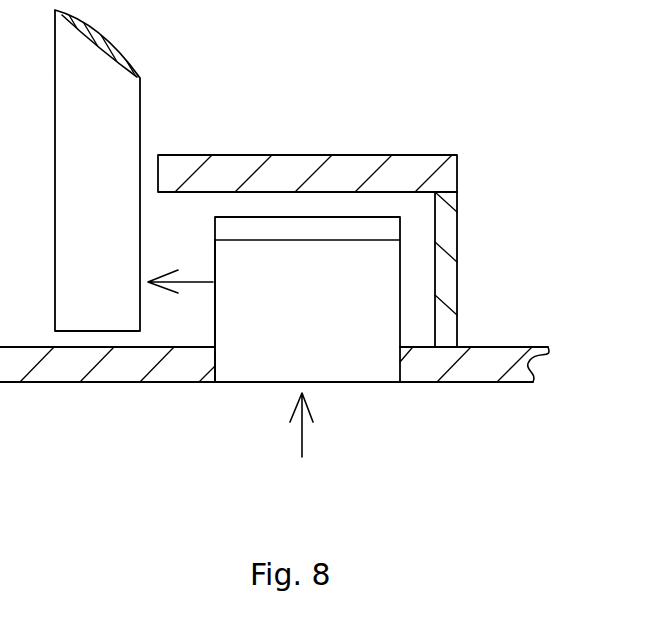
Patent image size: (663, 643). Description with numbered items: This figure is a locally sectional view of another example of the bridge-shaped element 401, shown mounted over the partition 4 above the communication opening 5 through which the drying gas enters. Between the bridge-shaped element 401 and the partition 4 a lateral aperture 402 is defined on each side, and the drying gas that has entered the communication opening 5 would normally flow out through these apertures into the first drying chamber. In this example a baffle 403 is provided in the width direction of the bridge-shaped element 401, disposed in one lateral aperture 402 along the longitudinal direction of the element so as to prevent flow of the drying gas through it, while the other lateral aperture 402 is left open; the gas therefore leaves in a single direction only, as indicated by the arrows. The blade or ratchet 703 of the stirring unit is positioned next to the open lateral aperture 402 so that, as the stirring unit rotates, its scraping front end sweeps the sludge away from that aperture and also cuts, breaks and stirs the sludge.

The partition 4 is at (523, 370).
The communication opening 5 is at (348, 362).
The bridge-shaped element 401 is at (347, 170).
The lateral aperture 402 is at (203, 312).
The baffle 403 is at (445, 270).
The blade or ratchet 703 is at (130, 113).